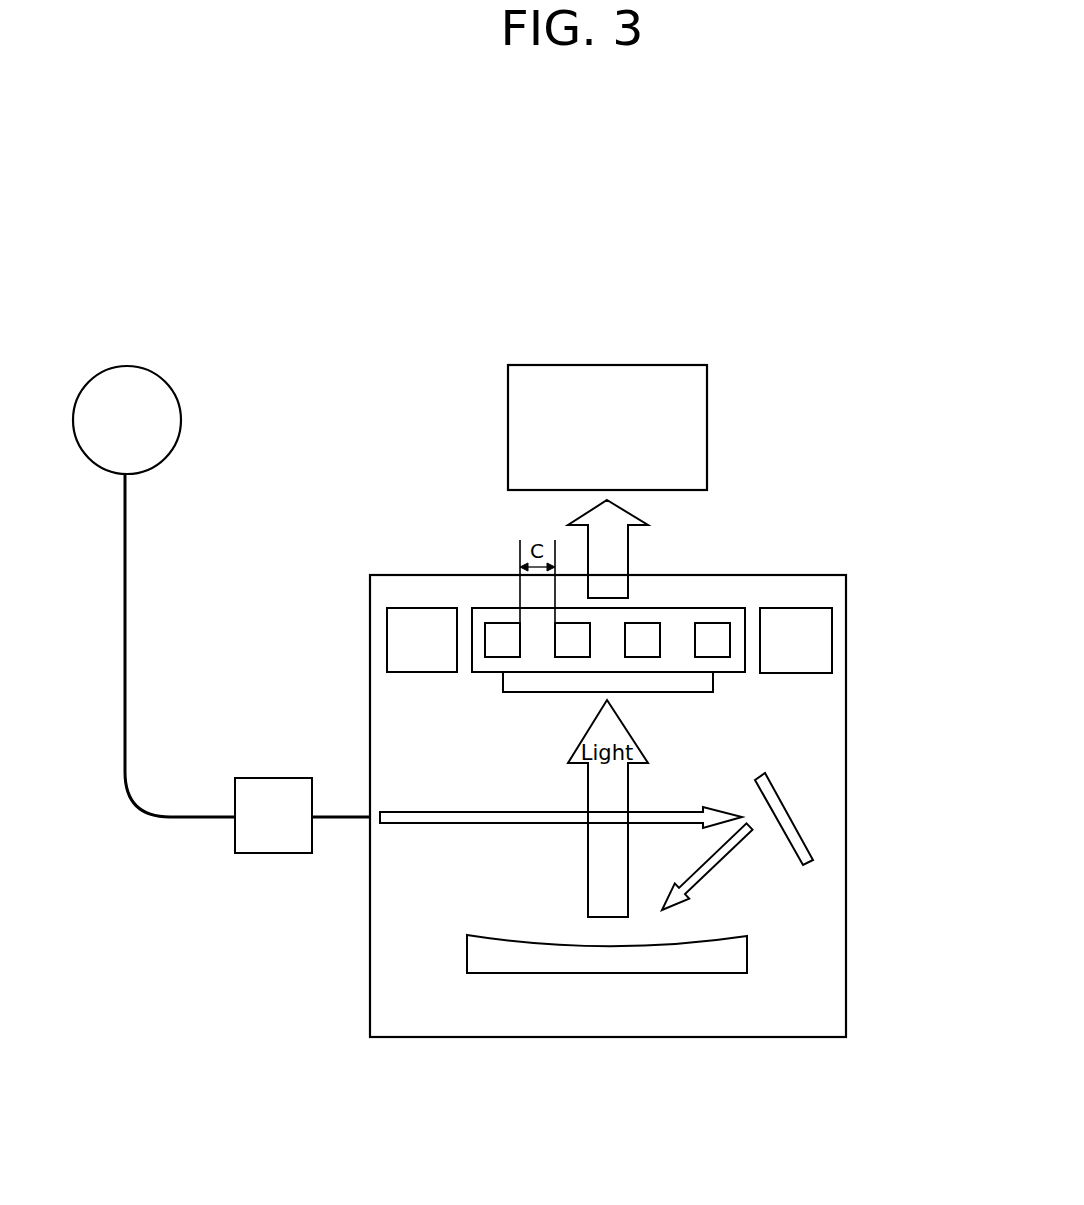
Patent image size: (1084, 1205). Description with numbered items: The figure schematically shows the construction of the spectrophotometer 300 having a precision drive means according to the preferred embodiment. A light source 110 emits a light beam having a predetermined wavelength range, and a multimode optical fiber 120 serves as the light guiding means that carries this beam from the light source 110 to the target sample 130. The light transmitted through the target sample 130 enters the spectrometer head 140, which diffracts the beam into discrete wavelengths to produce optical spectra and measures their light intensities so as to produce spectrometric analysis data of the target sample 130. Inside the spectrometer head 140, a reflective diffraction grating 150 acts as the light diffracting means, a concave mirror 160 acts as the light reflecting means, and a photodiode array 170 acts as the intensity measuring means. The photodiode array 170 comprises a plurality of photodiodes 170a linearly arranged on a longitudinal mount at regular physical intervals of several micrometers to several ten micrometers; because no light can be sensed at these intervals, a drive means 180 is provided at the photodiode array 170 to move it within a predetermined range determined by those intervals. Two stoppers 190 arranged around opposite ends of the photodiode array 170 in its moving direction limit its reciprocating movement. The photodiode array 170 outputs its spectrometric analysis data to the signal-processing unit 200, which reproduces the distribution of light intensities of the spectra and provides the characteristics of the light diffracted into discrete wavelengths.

The light source 110 is at (162, 387).
The multimode optical fiber 120 is at (126, 555).
The target sample 130 is at (263, 778).
The spectrometer head 140 is at (647, 1052).
The reflective diffraction grating 150 is at (788, 813).
The concave mirror 160 is at (507, 965).
The photodiode array 170 is at (620, 582).
The photodiode 170a is at (500, 623).
The drive means 180 is at (713, 680).
The stopper 190 is at (387, 640).
The signal-processing unit 200 is at (607, 365).
The spectrophotometer 300 is at (283, 922).